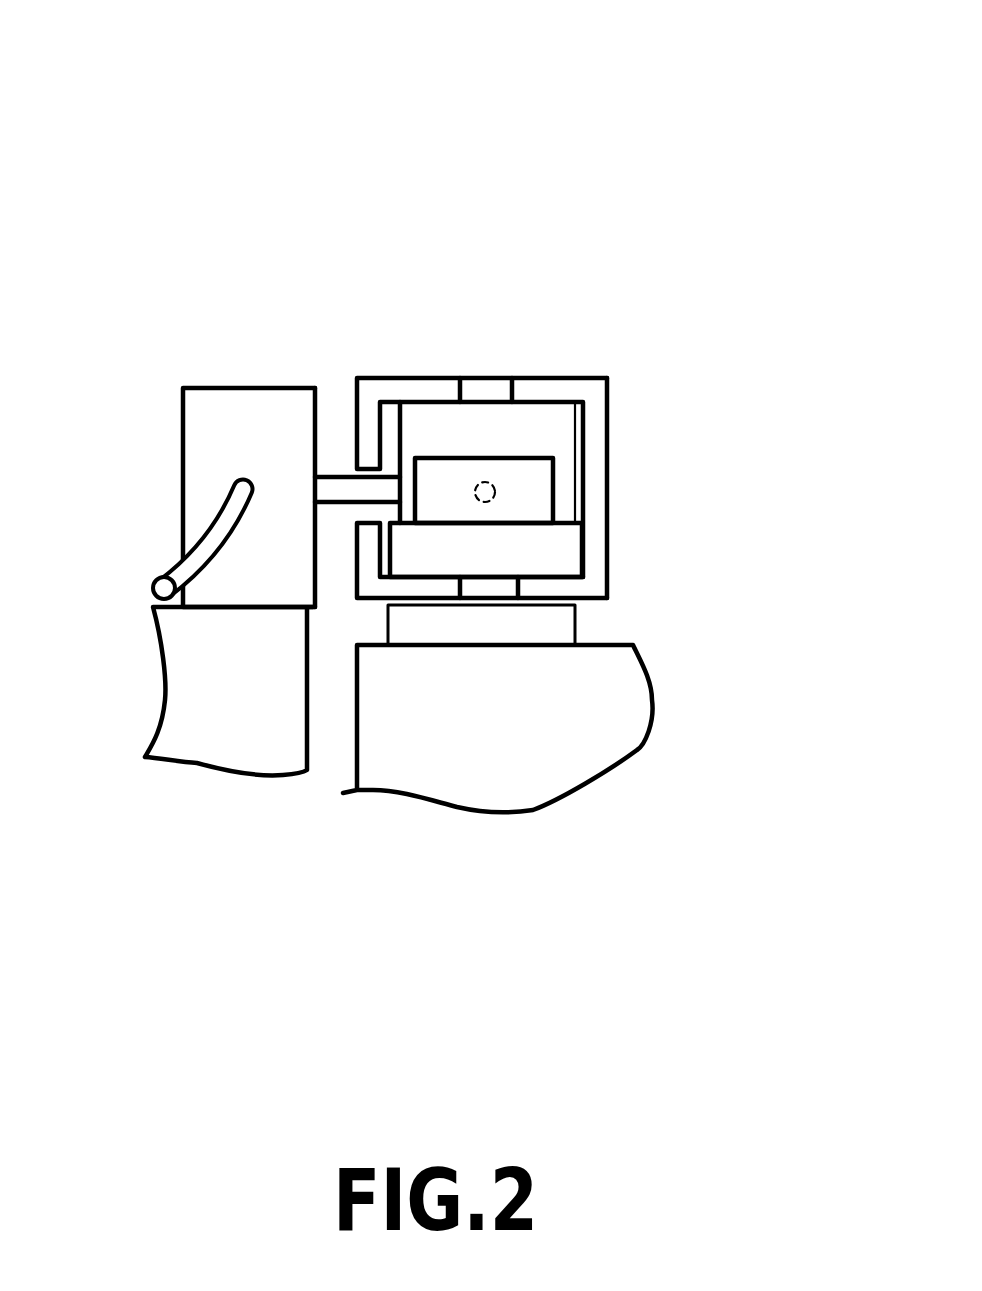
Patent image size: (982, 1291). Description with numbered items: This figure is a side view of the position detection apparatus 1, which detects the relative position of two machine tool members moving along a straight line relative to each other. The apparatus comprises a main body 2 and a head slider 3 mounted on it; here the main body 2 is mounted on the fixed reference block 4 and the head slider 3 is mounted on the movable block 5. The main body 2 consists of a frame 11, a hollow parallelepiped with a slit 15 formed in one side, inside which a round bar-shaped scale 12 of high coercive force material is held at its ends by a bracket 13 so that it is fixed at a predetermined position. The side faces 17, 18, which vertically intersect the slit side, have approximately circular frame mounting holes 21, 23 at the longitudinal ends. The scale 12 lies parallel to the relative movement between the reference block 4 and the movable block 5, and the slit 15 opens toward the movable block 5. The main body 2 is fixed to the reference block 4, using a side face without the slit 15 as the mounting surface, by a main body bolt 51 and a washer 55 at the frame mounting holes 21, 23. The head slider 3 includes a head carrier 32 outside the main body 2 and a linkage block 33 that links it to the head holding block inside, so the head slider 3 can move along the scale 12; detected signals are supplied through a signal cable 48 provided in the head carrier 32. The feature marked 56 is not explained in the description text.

The position detection apparatus 1 is at (472, 170).
The main body 2 is at (636, 393).
The head slider 3 is at (194, 388).
The reference block 4 is at (470, 775).
The movable block 5 is at (208, 717).
The frame 11 is at (609, 487).
The scale 12 is at (494, 488).
The bracket 13 is at (447, 435).
The slit 15 is at (343, 445).
The side face 17 is at (563, 376).
The side face 18 is at (576, 629).
The frame mounting hole 21 is at (487, 376).
The frame mounting hole 23 is at (488, 588).
The head carrier 32 is at (263, 386).
The linkage block 33 is at (327, 474).
The signal cable 48 is at (172, 565).
The main body bolt 51 is at (537, 473).
The washer 55 is at (556, 550).
The gap 56 is at (598, 609).